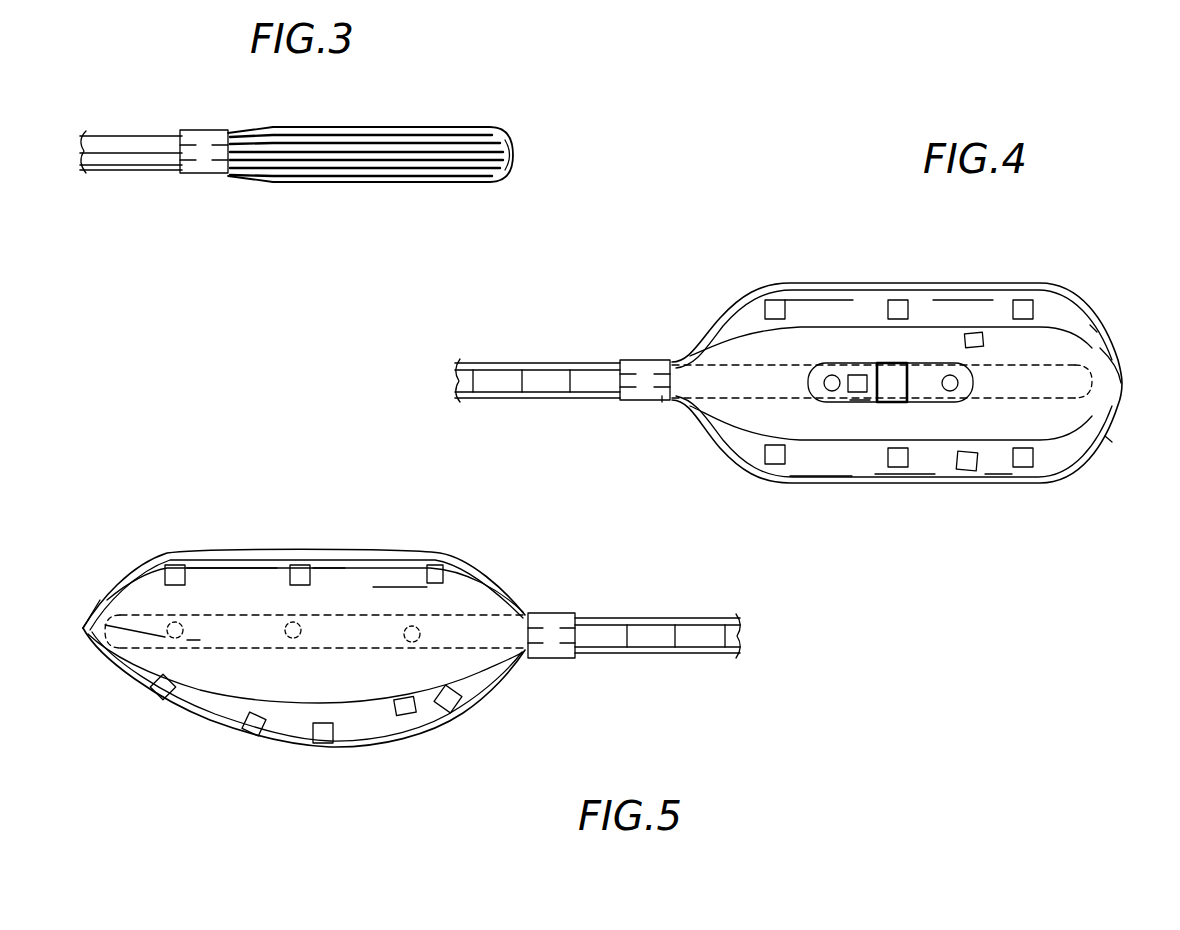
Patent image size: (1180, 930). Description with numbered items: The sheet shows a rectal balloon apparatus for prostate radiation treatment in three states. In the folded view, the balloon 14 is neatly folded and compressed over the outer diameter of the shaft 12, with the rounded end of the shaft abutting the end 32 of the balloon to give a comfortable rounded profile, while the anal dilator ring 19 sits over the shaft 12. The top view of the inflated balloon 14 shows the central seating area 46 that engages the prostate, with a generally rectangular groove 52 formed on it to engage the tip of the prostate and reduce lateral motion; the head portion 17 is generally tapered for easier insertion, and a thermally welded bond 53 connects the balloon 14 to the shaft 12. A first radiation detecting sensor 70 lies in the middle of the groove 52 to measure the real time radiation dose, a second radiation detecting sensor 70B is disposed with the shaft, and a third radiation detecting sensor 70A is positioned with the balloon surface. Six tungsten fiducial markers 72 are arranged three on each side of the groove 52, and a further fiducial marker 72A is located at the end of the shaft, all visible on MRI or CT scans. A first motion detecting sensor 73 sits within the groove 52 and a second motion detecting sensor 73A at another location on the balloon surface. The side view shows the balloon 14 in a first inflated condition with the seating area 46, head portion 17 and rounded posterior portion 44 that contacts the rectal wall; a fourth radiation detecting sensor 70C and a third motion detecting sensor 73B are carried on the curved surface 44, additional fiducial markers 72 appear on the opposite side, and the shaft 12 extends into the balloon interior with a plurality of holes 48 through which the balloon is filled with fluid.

In FIG. 3, the shaft 12 is at (150, 135).
In FIG. 4, the shaft 12 is at (553, 363).
In FIG. 5, the shaft 12 is at (300, 615).
In FIG. 3, the balloon 14 is at (365, 128).
In FIG. 4, the balloon 14 is at (945, 284).
In FIG. 5, the balloon 14 is at (455, 557).
In FIG. 4, the head portion 17 is at (1100, 348).
In FIG. 5, the head portion 17 is at (100, 597).
In FIG. 3, the anal dilator ring 19 is at (202, 175).
In FIG. 4, the anal dilator ring 19 is at (645, 358).
In FIG. 5, the anal dilator ring 19 is at (555, 613).
In FIG. 3, the end 32 is at (513, 157).
In FIG. 5, the posterior portion 44 is at (170, 713).
In FIG. 4, the central seating area 46 is at (786, 291).
In FIG. 5, the central seating area 46 is at (270, 553).
In FIG. 5, the holes 48 is at (288, 640).
In FIG. 4, the groove 52 is at (860, 402).
In FIG. 4, the thermally welded bond 53 is at (664, 402).
In FIG. 4, the first radiation detecting sensor 70 is at (890, 376).
In FIG. 4, the third radiation detecting sensor 70A is at (968, 472).
In FIG. 4, the second radiation detecting sensor 70B is at (1112, 442).
In FIG. 5, the fourth radiation detecting sensor 70C is at (250, 735).
In FIG. 4, the fiducial markers 72 is at (763, 306).
In FIG. 5, the fiducial markers 72 is at (175, 565).
In FIG. 4, the fiducial marker 72A is at (1097, 330).
In FIG. 4, the first motion detecting sensor 73 is at (855, 375).
In FIG. 4, the second motion detecting sensor 73A is at (976, 333).
In FIG. 5, the third motion detecting sensor 73B is at (418, 720).